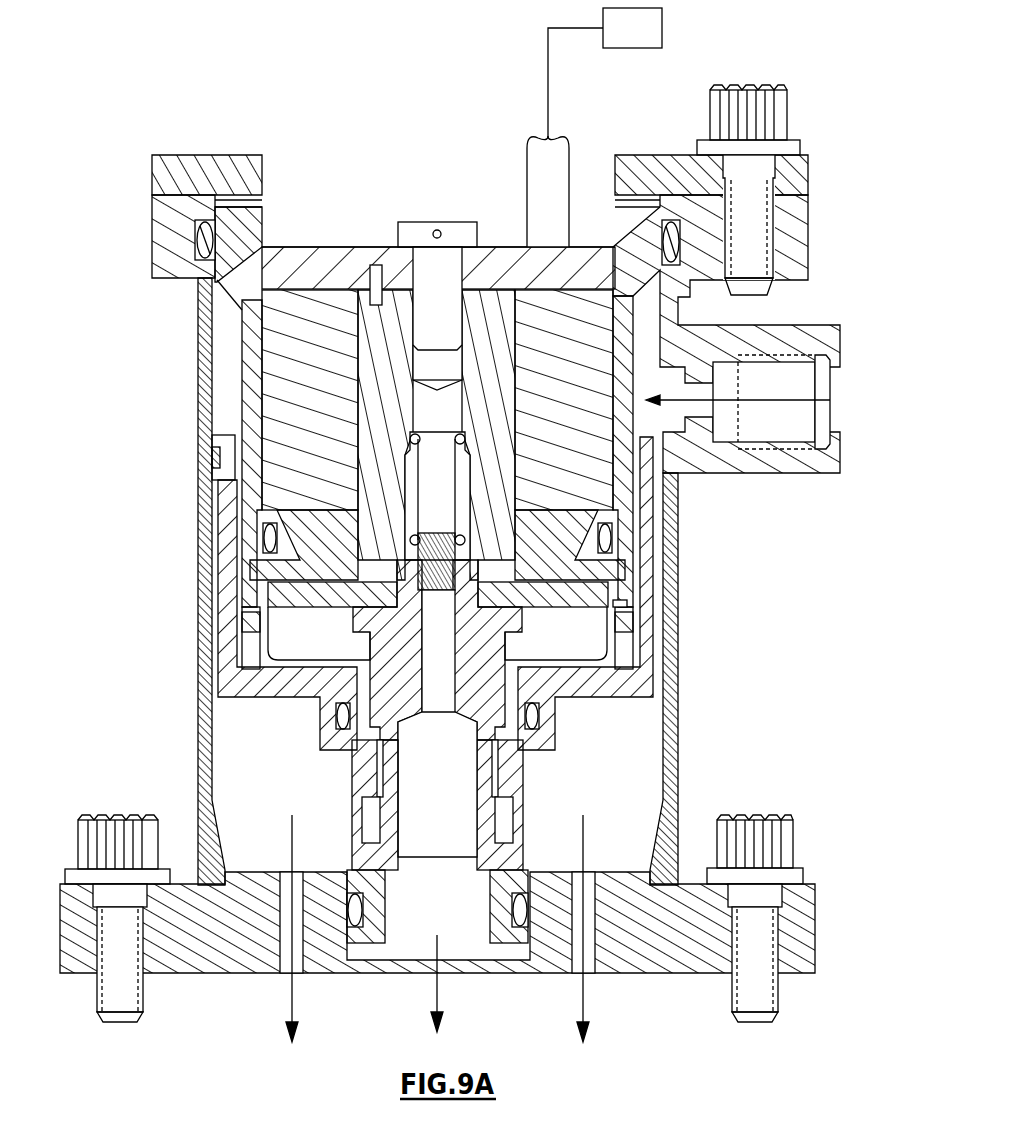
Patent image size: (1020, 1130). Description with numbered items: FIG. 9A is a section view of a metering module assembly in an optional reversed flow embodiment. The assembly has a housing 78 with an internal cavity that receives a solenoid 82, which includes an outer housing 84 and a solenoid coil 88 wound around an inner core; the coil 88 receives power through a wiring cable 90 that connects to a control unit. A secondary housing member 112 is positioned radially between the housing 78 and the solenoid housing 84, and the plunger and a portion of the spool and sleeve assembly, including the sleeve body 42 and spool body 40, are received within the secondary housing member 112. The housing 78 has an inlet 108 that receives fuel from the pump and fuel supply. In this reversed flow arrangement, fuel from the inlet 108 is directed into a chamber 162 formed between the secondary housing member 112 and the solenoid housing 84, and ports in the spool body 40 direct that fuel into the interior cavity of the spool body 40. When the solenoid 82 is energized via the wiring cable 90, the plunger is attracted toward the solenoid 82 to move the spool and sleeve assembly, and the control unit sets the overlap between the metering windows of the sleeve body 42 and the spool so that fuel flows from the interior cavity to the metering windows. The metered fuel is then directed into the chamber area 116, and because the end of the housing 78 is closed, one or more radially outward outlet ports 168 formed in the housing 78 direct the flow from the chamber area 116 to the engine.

The solenoid 82 is at (400, 180).
The outer housing 84 is at (300, 262).
The wiring cable 90 is at (553, 170).
The solenoid coil 88 is at (290, 407).
The inlet 108 is at (800, 378).
The secondary housing member 112 is at (650, 556).
The chamber 162 is at (636, 605).
The housing 78 is at (205, 634).
The sleeve body 42 is at (362, 790).
The spool body 40 is at (515, 735).
The chamber area 116 is at (655, 788).
The outlet ports 168 is at (283, 975).